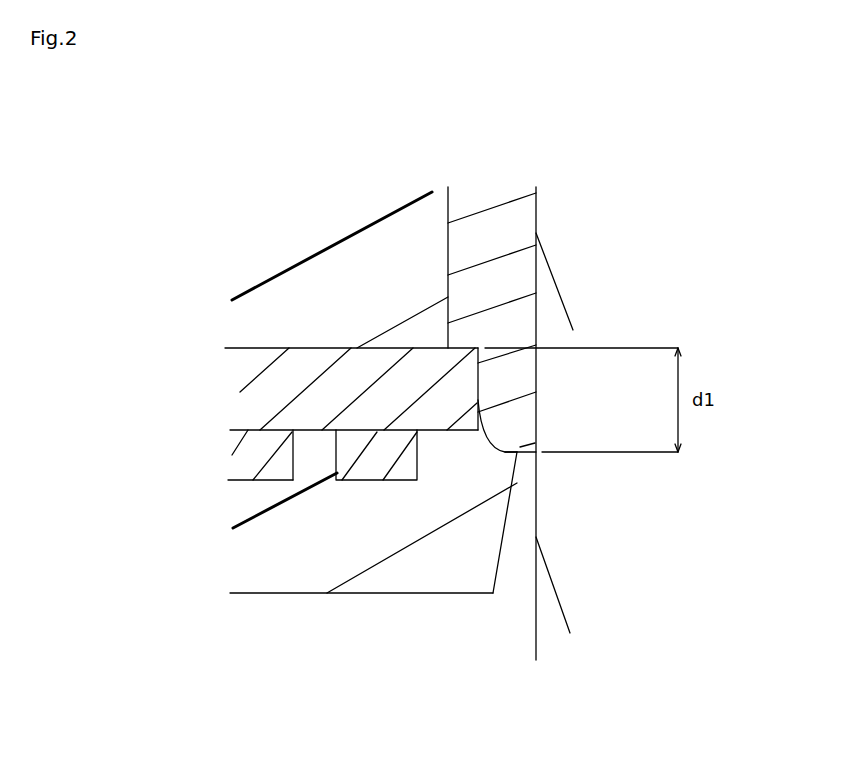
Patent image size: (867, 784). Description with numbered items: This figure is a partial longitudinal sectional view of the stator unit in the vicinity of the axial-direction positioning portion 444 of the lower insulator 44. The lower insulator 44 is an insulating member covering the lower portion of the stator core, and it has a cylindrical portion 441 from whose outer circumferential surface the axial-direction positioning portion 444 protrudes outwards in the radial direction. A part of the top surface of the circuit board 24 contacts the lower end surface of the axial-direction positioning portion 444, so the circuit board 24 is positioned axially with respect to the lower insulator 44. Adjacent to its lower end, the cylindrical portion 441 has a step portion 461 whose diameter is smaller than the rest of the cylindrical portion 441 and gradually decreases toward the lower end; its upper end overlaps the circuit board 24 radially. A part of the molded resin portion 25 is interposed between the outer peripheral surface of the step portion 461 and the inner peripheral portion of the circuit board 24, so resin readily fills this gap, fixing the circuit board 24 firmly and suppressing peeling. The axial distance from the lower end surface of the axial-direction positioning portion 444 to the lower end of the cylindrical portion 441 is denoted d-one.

The circuit board 24 is at (275, 397).
The molded resin portion 25 is at (292, 563).
The lower insulator 44 is at (523, 220).
The cylindrical portion 441 is at (587, 348).
The axial-direction positioning portion 444 is at (455, 347).
The step portion 461 is at (485, 448).